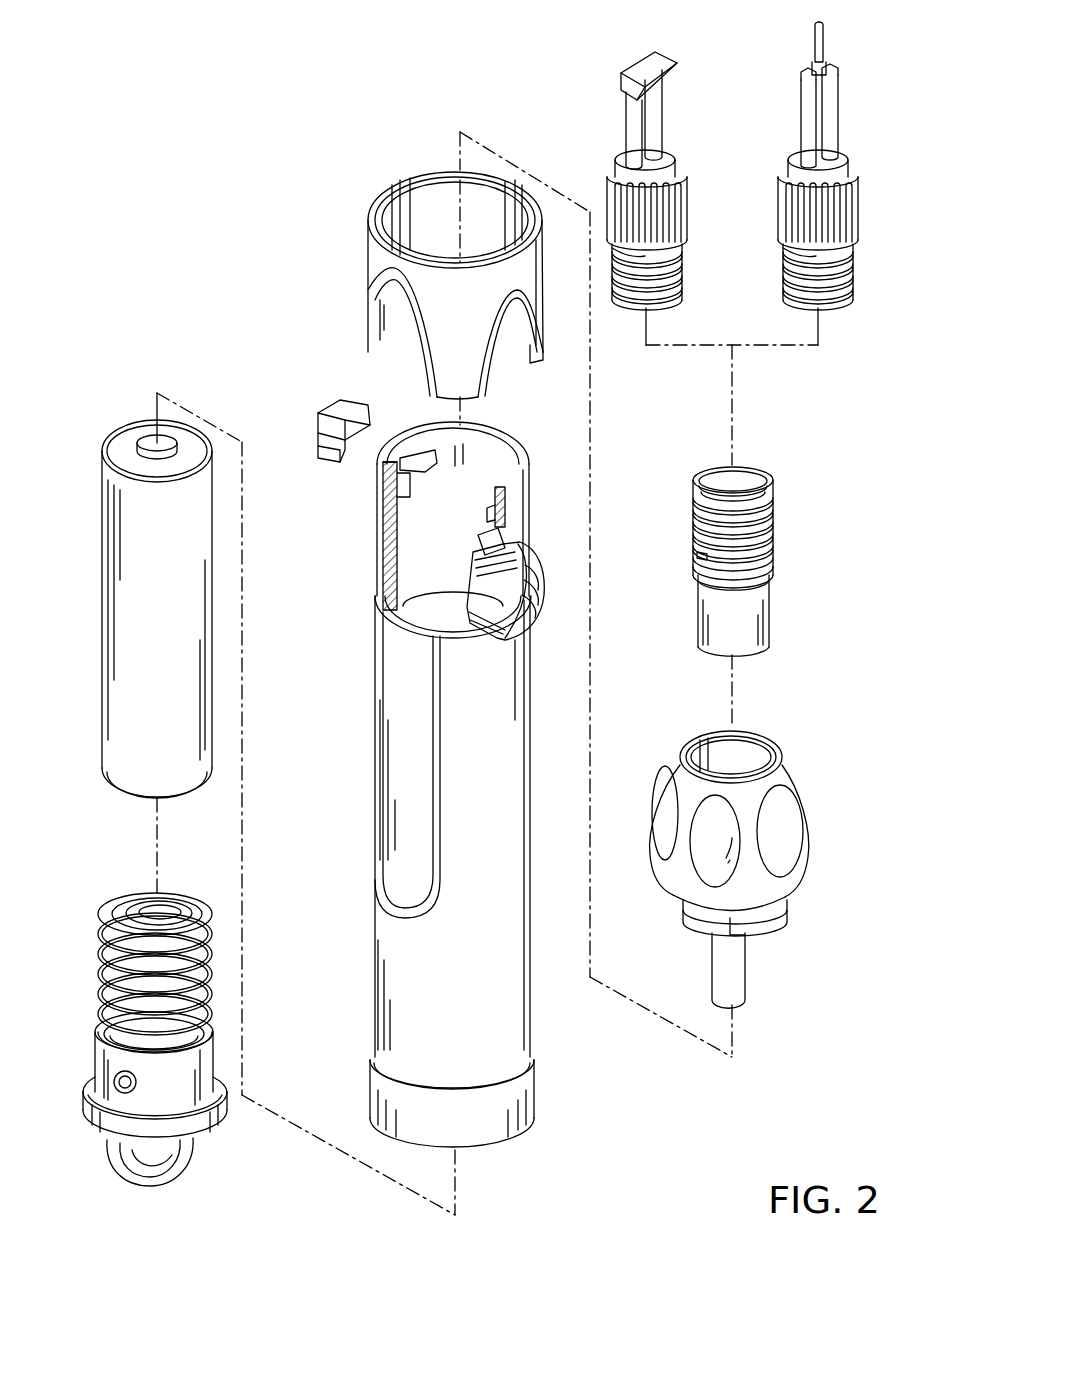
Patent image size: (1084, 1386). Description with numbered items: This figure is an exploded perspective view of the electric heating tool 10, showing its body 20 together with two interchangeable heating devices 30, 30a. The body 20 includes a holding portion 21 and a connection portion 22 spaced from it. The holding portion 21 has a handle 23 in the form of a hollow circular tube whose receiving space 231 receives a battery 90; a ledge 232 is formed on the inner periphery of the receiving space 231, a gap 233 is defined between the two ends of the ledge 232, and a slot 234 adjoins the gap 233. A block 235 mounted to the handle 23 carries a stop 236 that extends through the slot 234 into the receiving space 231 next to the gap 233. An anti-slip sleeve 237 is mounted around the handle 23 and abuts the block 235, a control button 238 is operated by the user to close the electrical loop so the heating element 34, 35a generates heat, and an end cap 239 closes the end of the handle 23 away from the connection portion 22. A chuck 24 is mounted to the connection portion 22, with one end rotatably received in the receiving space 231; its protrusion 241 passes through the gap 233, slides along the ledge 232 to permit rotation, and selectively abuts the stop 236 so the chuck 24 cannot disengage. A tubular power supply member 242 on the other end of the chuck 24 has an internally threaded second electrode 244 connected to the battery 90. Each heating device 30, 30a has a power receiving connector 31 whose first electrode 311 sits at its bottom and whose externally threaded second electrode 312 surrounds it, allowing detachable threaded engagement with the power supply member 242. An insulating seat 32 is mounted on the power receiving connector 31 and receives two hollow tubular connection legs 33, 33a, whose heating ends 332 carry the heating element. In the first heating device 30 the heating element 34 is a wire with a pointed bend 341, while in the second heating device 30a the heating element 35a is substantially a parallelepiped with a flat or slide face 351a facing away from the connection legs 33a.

The electric heating tool 10 is at (255, 150).
The connection portion 22 is at (385, 147).
The anti-slip sleeve 237 is at (378, 262).
The body 20 is at (360, 697).
The handle 23 is at (400, 933).
The holding portion 21 is at (413, 1148).
The receiving space 231 is at (482, 465).
The ledge 232 is at (470, 485).
The gap 233 is at (427, 440).
The slot 234 is at (382, 460).
The block 235 is at (318, 405).
The stop 236 is at (335, 428).
The control button 238 is at (526, 615).
The end cap 239 is at (205, 1120).
The battery 90 is at (200, 703).
The heating device 30a is at (597, 125).
The heating element 35a is at (618, 70).
The flat or slide face 351a is at (655, 58).
The connection legs 33a is at (636, 115).
The heating device 30 is at (770, 128).
The power receiving connector 31 is at (858, 270).
The first electrode 311 is at (816, 320).
The second electrode 312 is at (824, 308).
The seat 32 is at (835, 218).
The connection legs 33 is at (812, 110).
The heating end 332 is at (822, 62).
The heating element 34 is at (810, 40).
The pointed bend 341 is at (818, 30).
The power supply member 242 is at (786, 560).
The second electrode 244 is at (755, 485).
The chuck 24 is at (775, 880).
The protrusion 241 is at (775, 925).